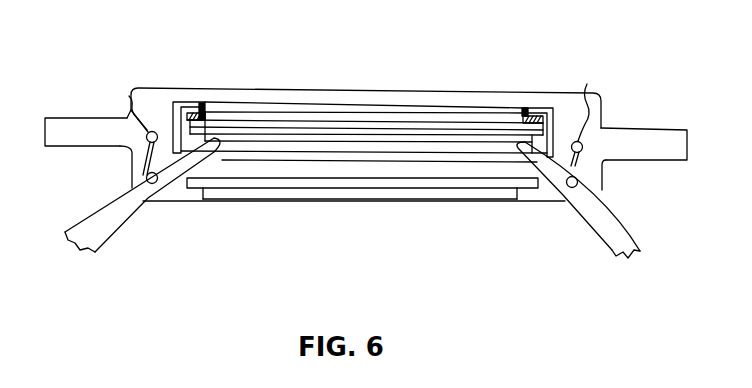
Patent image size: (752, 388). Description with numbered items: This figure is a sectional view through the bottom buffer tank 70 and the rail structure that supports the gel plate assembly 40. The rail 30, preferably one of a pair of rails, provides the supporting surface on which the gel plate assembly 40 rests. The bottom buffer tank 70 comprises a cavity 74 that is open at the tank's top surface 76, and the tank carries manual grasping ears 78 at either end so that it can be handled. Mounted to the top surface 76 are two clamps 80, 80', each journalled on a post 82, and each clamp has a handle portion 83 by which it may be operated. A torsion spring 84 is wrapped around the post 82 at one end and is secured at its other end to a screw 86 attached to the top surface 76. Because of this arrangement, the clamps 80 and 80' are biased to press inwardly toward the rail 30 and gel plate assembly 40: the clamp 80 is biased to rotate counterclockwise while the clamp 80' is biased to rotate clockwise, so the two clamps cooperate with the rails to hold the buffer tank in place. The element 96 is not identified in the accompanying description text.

The bottom buffer tank 70 is at (613, 75).
The rail 30 is at (190, 106).
The gel plate assembly 40 is at (376, 124).
The cavity 74 is at (427, 121).
The top surface 76 is at (276, 172).
The manual grasping ears 78 is at (58, 126).
The clamp 80 is at (124, 195).
The clamp 80' is at (601, 196).
The post 82 is at (155, 184).
The handle portion 83 is at (110, 225).
The torsion spring 84 is at (127, 157).
The screw 86 is at (128, 96).
The bottom plate 96 is at (403, 188).